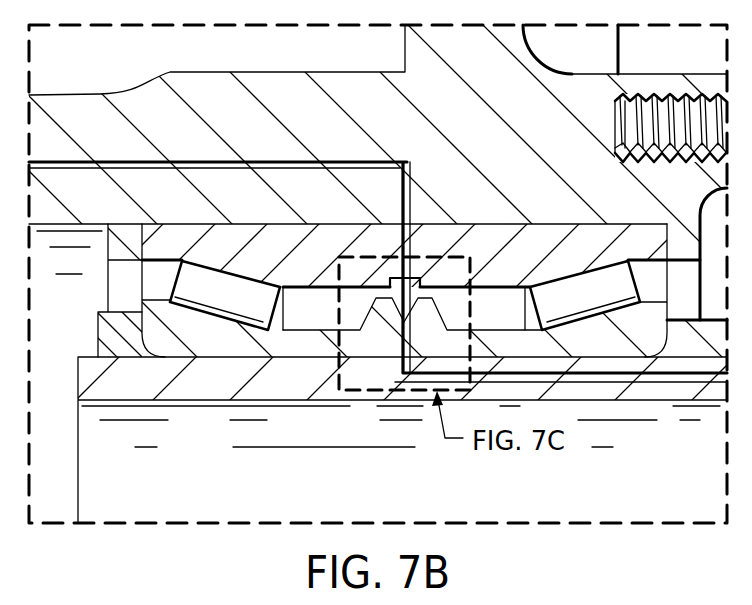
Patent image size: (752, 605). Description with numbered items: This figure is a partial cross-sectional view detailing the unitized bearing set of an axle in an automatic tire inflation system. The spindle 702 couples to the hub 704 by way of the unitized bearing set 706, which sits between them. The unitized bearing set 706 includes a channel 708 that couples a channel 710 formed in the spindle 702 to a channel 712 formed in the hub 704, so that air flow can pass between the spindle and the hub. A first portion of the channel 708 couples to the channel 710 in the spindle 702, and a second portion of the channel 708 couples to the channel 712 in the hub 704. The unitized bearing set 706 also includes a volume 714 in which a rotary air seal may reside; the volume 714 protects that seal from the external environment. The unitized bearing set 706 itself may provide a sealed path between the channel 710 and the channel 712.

The spindle 702 is at (208, 401).
The hub 704 is at (232, 137).
The unitized bearing set 706 is at (562, 211).
The channel 708 is at (405, 237).
The channel 710 is at (660, 383).
The channel 712 is at (289, 163).
The volume 714 is at (395, 305).